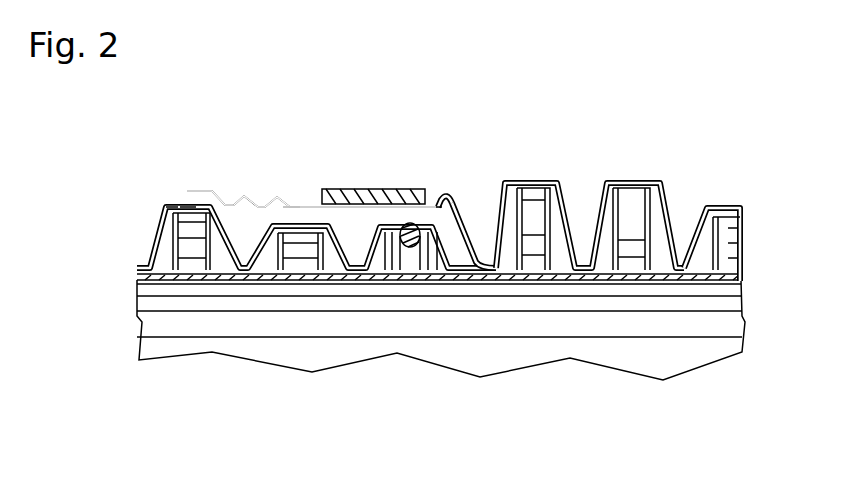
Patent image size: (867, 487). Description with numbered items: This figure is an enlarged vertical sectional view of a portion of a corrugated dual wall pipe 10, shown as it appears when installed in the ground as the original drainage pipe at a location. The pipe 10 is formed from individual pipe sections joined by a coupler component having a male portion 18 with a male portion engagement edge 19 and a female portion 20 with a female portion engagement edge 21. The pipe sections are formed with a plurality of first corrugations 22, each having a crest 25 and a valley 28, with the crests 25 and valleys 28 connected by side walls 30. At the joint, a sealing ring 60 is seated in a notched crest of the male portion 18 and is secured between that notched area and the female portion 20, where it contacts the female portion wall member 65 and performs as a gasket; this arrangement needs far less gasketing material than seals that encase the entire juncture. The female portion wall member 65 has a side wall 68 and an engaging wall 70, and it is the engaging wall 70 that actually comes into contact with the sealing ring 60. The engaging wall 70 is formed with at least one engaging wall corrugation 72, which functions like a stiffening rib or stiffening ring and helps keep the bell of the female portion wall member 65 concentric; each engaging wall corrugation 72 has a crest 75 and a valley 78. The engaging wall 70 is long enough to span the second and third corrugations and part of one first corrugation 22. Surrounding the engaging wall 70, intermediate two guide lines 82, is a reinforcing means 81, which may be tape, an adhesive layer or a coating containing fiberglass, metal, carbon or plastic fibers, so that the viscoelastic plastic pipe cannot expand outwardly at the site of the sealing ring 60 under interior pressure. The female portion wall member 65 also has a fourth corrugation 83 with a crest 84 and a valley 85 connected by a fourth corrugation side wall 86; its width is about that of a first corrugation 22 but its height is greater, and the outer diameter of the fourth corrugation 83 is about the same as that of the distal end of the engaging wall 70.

The corrugated dual wall pipe 10 is at (412, 396).
The male portion 18 is at (221, 293).
The male portion engagement edge 19 is at (468, 275).
The female portion 20 is at (465, 187).
The female portion engagement edge 21 is at (183, 190).
The first corrugations 22 is at (158, 212).
The crest 25 is at (163, 202).
The valley 28 is at (686, 262).
The side walls 30 is at (712, 206).
The sealing ring 60 is at (411, 222).
The female portion wall member 65 is at (438, 190).
The side wall 68 is at (474, 204).
The engaging wall 70 is at (308, 205).
The engaging wall corrugation 72 is at (249, 182).
The crest 75 is at (250, 194).
The valley 78 is at (262, 200).
The reinforcing means 81 is at (364, 189).
The guide lines 82 is at (283, 204).
The fourth corrugation 83 is at (653, 165).
The crest 84 is at (632, 180).
The valley 85 is at (580, 210).
The fourth corrugation side wall 86 is at (676, 255).